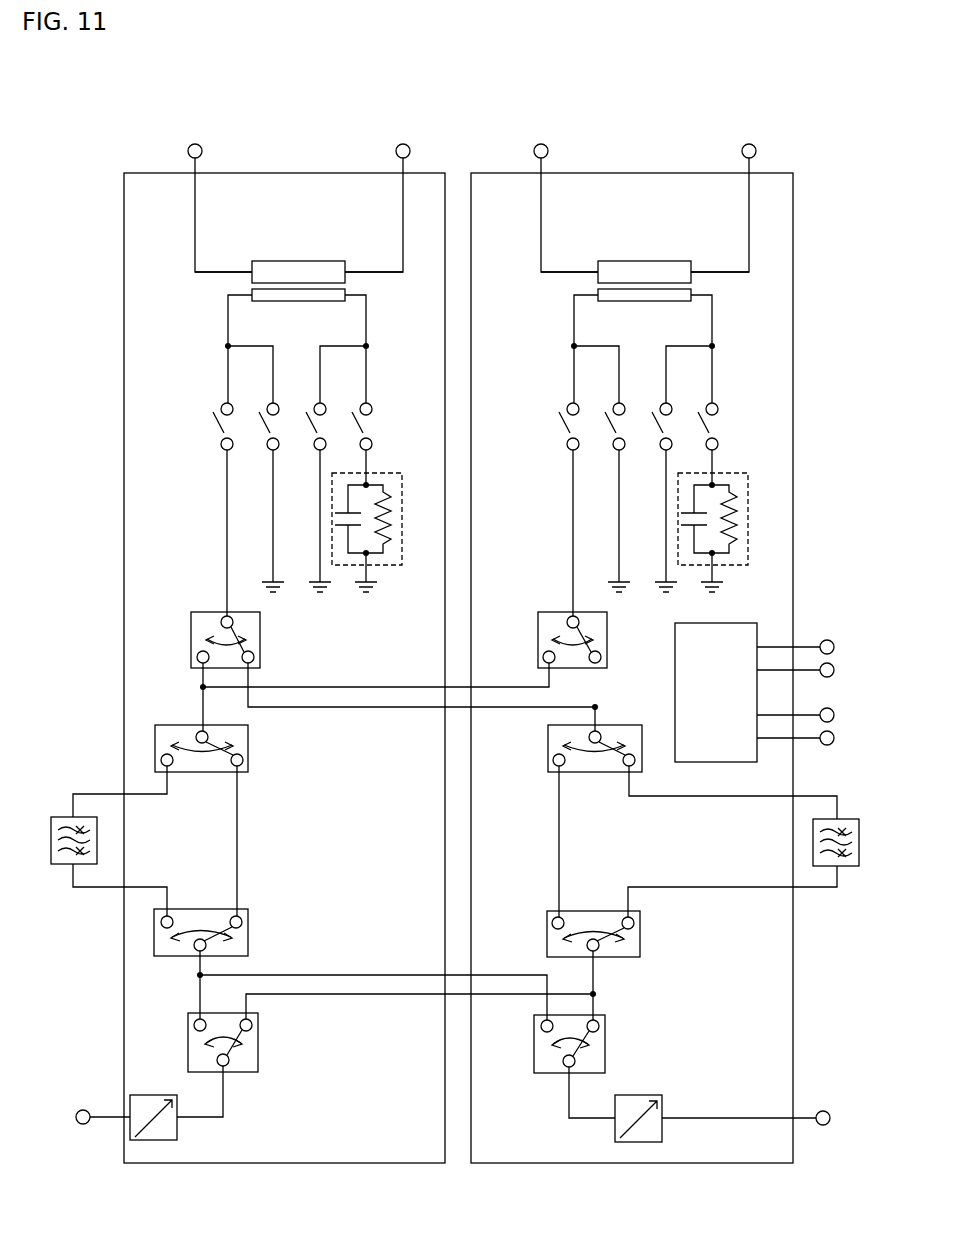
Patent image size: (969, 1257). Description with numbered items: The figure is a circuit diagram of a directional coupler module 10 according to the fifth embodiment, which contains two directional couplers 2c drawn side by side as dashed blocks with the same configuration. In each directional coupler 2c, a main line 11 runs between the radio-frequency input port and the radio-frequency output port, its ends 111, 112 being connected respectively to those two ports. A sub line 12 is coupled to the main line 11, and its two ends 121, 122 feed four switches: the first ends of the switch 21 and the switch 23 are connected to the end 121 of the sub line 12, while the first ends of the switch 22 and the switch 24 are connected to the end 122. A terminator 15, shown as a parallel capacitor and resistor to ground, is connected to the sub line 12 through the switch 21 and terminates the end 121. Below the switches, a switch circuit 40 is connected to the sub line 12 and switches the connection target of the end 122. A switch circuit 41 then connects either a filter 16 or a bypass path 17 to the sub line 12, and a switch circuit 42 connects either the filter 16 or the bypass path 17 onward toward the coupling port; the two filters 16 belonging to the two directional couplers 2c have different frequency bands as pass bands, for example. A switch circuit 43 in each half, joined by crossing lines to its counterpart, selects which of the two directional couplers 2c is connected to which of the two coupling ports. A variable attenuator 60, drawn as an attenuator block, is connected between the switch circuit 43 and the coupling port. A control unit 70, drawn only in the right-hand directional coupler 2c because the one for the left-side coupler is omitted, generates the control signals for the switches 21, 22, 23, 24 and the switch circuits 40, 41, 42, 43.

The directional coupler module 10 is at (810, 105).
The directional coupler 2c is at (275, 173).
The main line 11 is at (275, 261).
The end of main line 111 is at (252, 267).
The end of main line 112 is at (378, 256).
The sub line 12 is at (277, 301).
The end of sub line 121 is at (345, 294).
The end of sub line 122 is at (252, 294).
The switch 21 is at (365, 428).
The switch 22 is at (226, 428).
The switch 23 is at (319, 428).
The switch 24 is at (272, 428).
The terminator 15 is at (402, 498).
The switch circuit 40 is at (260, 634).
The switch circuit 41 is at (248, 737).
The switch circuit 42 is at (248, 922).
The switch circuit 43 is at (258, 1037).
The filter 16 is at (58, 817).
The bypass path 17 is at (237, 828).
The variable attenuator 60 is at (177, 1130).
The control unit 70 is at (757, 633).